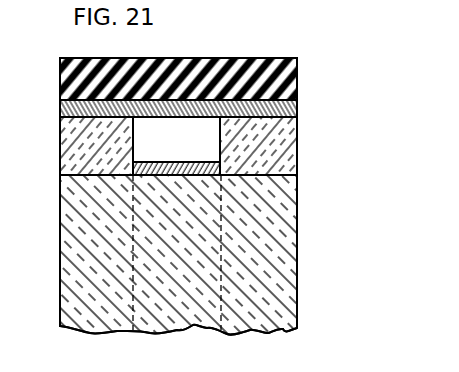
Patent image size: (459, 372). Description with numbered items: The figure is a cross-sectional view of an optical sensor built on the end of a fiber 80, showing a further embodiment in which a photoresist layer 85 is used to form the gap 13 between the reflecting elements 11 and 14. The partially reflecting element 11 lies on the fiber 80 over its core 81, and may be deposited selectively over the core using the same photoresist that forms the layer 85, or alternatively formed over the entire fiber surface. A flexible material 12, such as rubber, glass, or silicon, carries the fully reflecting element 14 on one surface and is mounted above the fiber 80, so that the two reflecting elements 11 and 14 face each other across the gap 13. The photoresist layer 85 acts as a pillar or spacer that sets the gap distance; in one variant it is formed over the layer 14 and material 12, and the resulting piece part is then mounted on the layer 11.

The partially reflecting element 11 is at (220, 166).
The flexible material 12 is at (282, 84).
The gap 13 is at (213, 140).
The fully reflecting element 14 is at (282, 110).
The fiber 80 is at (290, 246).
The core 81 is at (192, 332).
The photoresist layer 85 is at (280, 135).